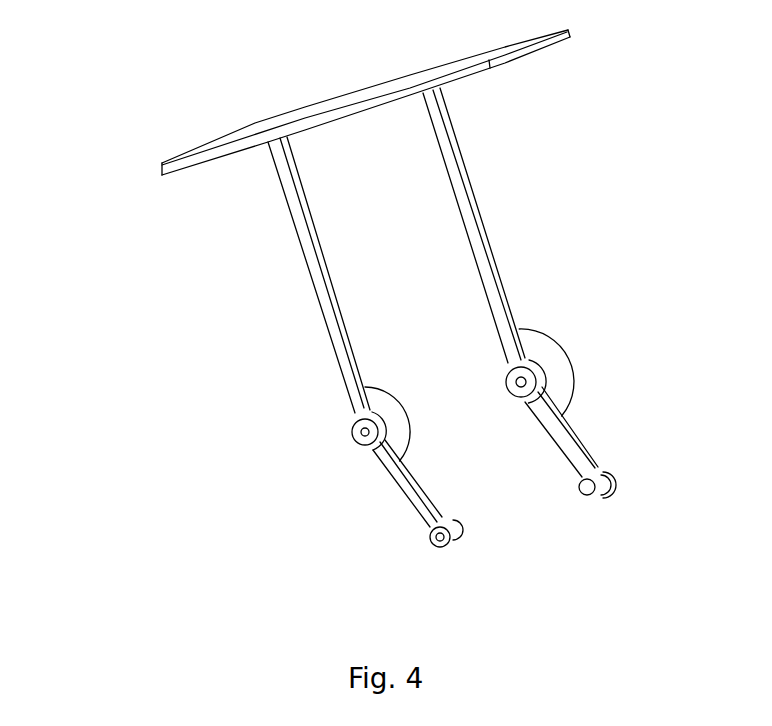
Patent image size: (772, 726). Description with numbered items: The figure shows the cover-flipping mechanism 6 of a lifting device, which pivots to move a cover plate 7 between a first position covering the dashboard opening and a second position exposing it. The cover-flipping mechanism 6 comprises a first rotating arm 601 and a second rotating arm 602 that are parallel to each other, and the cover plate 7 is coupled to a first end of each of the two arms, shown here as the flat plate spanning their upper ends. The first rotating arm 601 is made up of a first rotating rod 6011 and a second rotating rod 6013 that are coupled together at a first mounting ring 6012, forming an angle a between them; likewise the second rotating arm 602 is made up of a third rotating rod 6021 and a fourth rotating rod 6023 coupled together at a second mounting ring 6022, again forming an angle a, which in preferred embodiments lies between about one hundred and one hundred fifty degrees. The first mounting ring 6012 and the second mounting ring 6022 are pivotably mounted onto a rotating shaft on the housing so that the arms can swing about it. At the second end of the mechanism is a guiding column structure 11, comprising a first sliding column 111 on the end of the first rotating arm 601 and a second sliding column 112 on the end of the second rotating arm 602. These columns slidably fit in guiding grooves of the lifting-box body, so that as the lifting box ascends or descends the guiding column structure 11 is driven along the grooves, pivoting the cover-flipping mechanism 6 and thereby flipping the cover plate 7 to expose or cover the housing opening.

The cover plate 7 is at (317, 107).
The cover-flipping mechanism 6 is at (470, 205).
The first rotating arm 601 is at (307, 260).
The first rotating rod 6011 is at (345, 370).
The first mounting ring 6012 is at (350, 417).
The second rotating rod 6013 is at (412, 497).
The second rotating arm 602 is at (490, 240).
The third rotating rod 6021 is at (460, 180).
The second mounting ring 6022 is at (518, 377).
The fourth rotating rod 6023 is at (575, 455).
The guiding column structure 11 is at (463, 537).
The first sliding column 111 is at (430, 533).
The second sliding column 112 is at (607, 477).